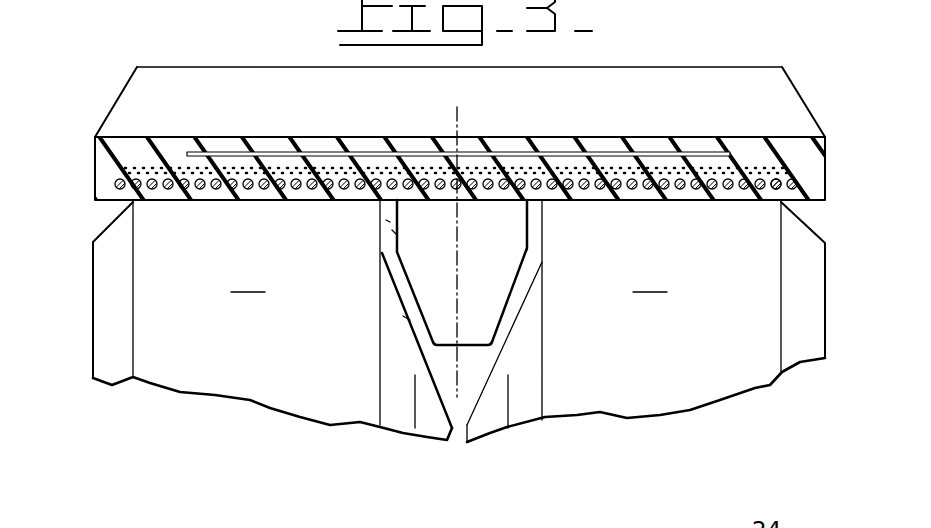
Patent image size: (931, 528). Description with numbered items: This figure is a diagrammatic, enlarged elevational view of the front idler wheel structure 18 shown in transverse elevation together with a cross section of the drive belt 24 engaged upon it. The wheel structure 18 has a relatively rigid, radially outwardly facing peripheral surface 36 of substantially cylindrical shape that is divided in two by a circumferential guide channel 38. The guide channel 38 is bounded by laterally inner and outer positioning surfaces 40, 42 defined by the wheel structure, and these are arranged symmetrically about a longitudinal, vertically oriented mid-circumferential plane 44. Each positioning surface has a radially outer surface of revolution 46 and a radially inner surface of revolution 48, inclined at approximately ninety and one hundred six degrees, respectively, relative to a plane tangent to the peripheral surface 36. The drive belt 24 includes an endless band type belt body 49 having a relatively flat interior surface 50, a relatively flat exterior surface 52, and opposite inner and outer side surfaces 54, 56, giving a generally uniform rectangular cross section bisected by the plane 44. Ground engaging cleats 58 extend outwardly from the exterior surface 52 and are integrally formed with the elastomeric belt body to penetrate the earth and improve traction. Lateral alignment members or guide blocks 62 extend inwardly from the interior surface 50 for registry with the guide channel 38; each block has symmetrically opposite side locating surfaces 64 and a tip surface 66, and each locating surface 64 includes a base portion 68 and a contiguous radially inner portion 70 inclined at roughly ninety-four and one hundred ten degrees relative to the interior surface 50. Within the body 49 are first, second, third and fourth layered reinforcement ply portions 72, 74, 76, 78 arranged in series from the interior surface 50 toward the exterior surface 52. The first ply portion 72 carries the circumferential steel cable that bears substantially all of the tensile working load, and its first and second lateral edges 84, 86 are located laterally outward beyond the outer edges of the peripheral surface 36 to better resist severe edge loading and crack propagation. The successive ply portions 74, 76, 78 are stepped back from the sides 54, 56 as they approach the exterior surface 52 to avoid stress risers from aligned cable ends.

The front idler wheel structure 18 is at (278, 392).
The drive belt 24 is at (454, 208).
The peripheral surface 36 is at (459, 341).
The guide channel 38 is at (438, 377).
The inner positioning surface 40 is at (392, 277).
The outer positioning surface 42 is at (528, 287).
The mid-circumferential plane 44 is at (460, 112).
The radially outer surface of revolution 46 is at (388, 222).
The radially inner surface of revolution 48 is at (405, 318).
The belt body 49 is at (325, 103).
The interior surface 50 is at (270, 203).
The exterior surface 52 is at (150, 137).
The inner side surface 54 is at (90, 147).
The outer side surface 56 is at (826, 152).
The cleats 58 is at (233, 80).
The guide blocks 62 is at (488, 310).
The locating surfaces 64 is at (532, 247).
The tip surface 66 is at (483, 352).
The base portion 68 is at (392, 232).
The radially inner portion 70 is at (408, 292).
The first ply portion 72 is at (782, 178).
The second ply portion 74 is at (762, 170).
The third ply portion 76 is at (670, 172).
The fourth ply portion 78 is at (560, 150).
The first lateral edge 84 is at (123, 195).
The second lateral edge 86 is at (792, 190).